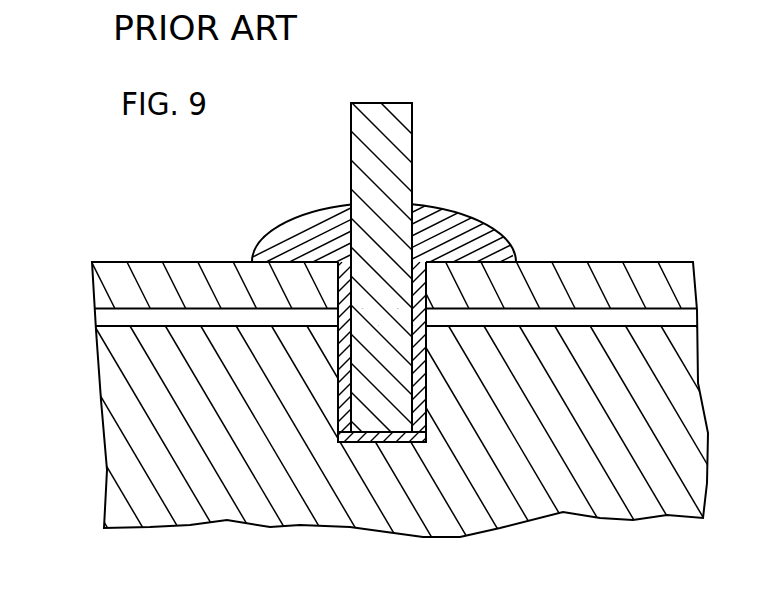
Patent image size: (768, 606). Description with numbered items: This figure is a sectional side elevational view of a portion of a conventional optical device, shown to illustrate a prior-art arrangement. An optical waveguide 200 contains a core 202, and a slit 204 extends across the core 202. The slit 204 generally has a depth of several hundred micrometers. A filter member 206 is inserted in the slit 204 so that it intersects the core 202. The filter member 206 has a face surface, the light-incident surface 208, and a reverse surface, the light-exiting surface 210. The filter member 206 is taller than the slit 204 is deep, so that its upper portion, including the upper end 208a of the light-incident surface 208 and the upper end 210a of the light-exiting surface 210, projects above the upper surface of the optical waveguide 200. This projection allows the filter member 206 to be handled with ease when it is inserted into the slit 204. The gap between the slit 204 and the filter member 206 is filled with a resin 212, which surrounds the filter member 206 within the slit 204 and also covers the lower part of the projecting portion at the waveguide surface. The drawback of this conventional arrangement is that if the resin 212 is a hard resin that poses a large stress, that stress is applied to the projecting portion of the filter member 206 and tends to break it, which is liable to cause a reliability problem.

The optical waveguide 200 is at (677, 357).
The core 202 is at (680, 318).
The slit 204 is at (430, 436).
The filter member 206 is at (387, 165).
The light-incident surface 208 is at (340, 314).
The upper end of light-incident surface 208a is at (350, 103).
The light-exiting surface 210 is at (427, 312).
The upper end of light-exiting surface 210a is at (412, 103).
The resin 212 is at (311, 240).